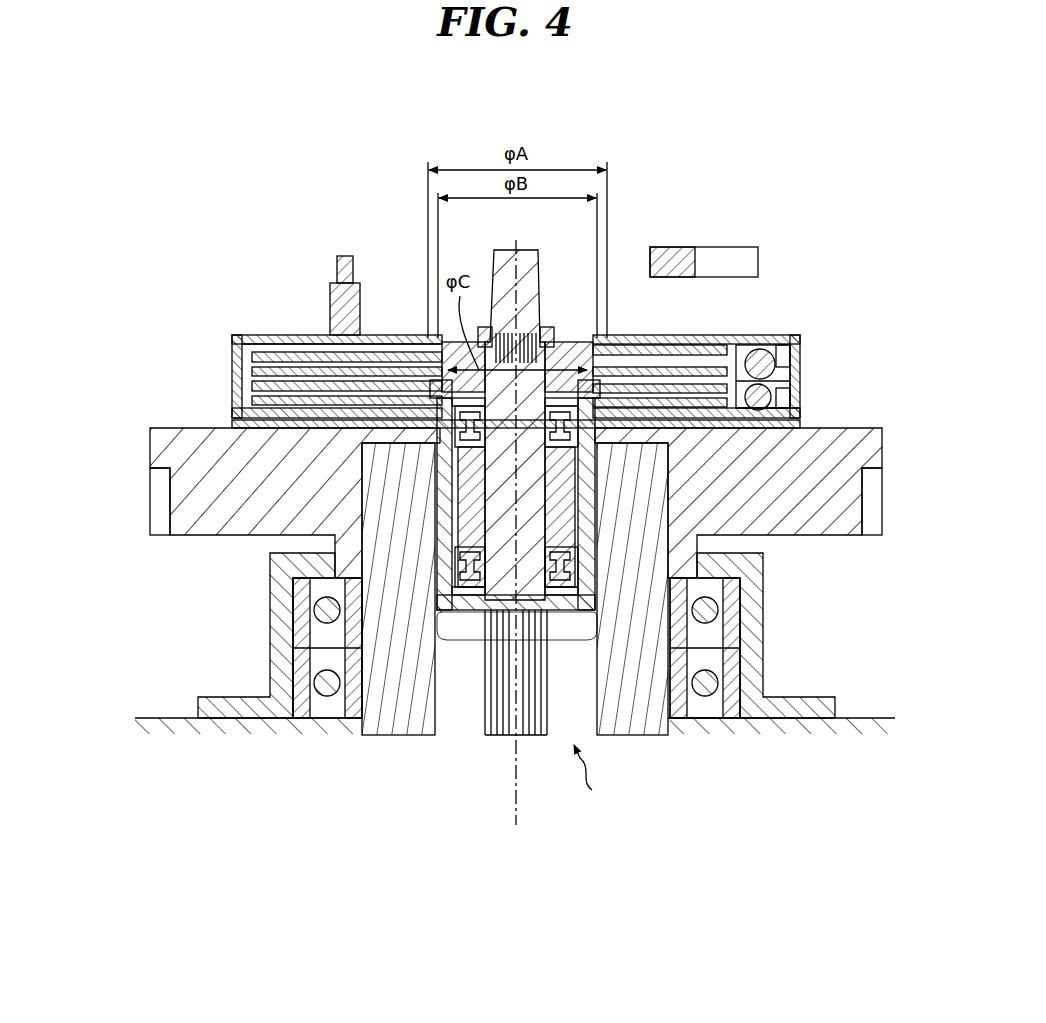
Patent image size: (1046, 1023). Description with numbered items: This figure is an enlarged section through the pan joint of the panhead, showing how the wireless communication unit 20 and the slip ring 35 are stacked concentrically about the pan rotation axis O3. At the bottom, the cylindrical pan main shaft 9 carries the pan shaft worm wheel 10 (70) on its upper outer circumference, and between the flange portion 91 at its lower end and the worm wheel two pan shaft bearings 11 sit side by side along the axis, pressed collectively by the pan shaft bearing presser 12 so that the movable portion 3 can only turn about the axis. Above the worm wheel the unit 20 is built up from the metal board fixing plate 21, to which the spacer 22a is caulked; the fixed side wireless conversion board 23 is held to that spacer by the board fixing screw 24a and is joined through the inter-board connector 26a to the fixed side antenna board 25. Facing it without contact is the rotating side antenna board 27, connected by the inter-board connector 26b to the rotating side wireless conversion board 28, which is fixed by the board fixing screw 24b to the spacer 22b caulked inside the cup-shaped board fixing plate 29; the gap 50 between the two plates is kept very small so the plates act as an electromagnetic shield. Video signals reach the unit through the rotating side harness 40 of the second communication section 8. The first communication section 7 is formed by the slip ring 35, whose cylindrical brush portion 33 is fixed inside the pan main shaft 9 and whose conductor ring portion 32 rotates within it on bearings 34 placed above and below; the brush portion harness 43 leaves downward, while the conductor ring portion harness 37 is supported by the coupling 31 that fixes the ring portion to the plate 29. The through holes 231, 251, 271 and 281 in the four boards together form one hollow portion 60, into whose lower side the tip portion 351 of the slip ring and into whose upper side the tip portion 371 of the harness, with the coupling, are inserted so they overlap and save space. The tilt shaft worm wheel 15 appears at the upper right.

The wireless communication unit 20 is at (232, 152).
The tilt shaft worm wheel 15 is at (668, 262).
The rotating side harness 40 is at (345, 268).
The board fixing plate 29 is at (300, 345).
The second communication section 8 is at (302, 342).
The rotating side wireless conversion board 28 is at (282, 357).
The inter-board connector 26b is at (282, 371).
The rotating side antenna board 27 is at (282, 386).
The inter-board connector 26a is at (282, 400).
The gap 50 is at (240, 425).
The pan shaft worm wheel 10 is at (250, 476).
The stator core 70 is at (465, 503).
The pan rotation axis O3 is at (260, 549).
The conductor ring portion 32 is at (516, 468).
The brush portion 33 is at (483, 540).
The pan shaft bearing presser 12 is at (270, 672).
The tip portion 351 is at (445, 392).
The tip portion 371 is at (482, 350).
The conductor ring portion harness 37 is at (528, 298).
The coupling 31 is at (566, 360).
The through hole 281 is at (605, 350).
The through hole 271 is at (603, 371).
The through hole 251 is at (603, 388).
The through hole 231 is at (603, 402).
The hollow portion 60 is at (613, 293).
The spacer 22b is at (782, 348).
The board fixing screw 24b is at (770, 362).
The fixed side antenna board 25 is at (750, 382).
The board fixing screw 24a is at (770, 400).
The fixed side wireless conversion board 23 is at (745, 410).
The spacer 22a is at (778, 412).
The board fixing plate 21 is at (790, 425).
The bearings 34 is at (580, 428).
The pan shaft bearings 11 is at (712, 618).
The movable portion 3 is at (542, 610).
The slip ring 35 is at (520, 630).
The brush portion harness 43 is at (498, 733).
The first communication section 7 is at (585, 781).
The pan main shaft 9 is at (642, 677).
The flange portion 91 is at (700, 730).